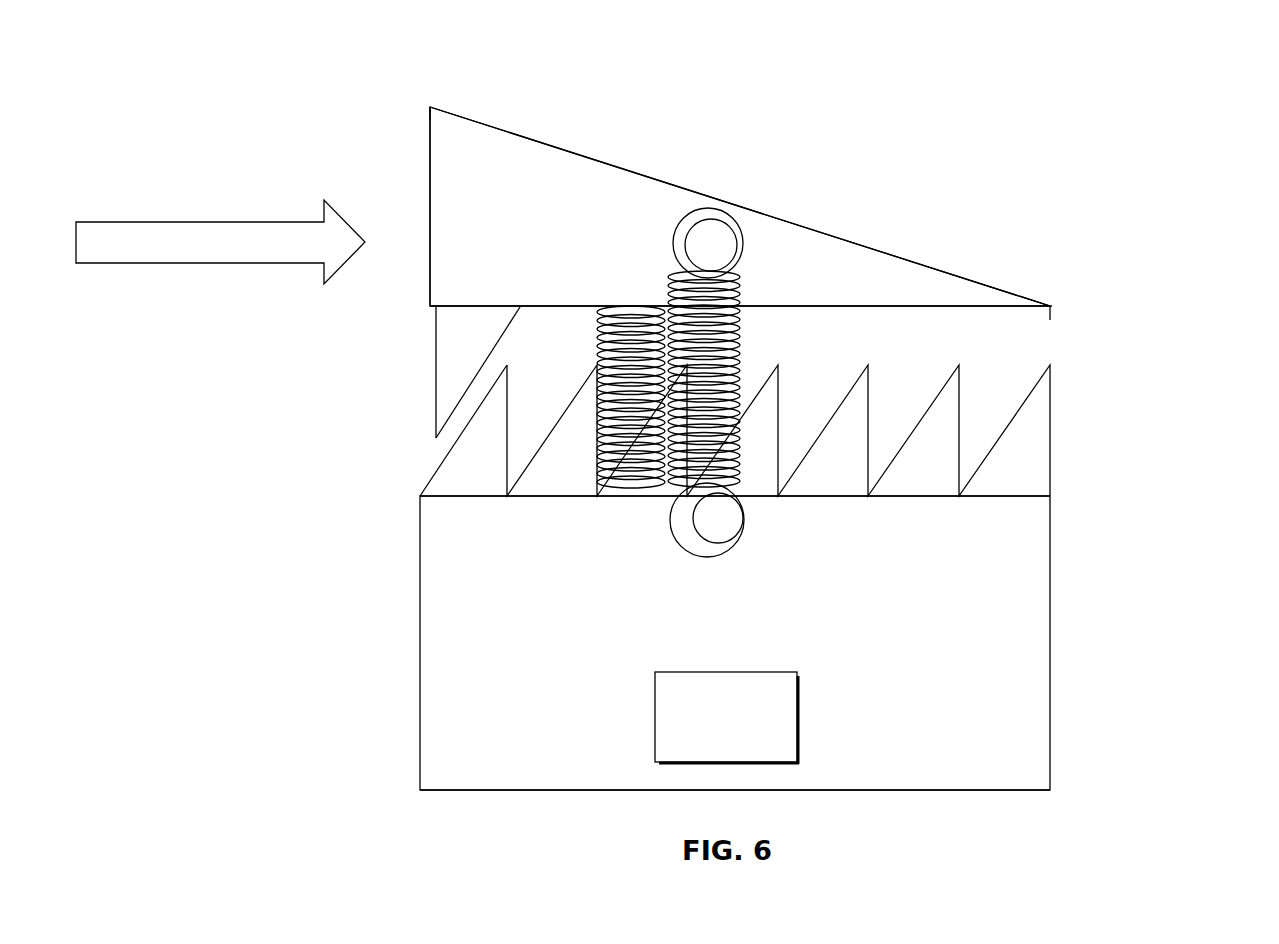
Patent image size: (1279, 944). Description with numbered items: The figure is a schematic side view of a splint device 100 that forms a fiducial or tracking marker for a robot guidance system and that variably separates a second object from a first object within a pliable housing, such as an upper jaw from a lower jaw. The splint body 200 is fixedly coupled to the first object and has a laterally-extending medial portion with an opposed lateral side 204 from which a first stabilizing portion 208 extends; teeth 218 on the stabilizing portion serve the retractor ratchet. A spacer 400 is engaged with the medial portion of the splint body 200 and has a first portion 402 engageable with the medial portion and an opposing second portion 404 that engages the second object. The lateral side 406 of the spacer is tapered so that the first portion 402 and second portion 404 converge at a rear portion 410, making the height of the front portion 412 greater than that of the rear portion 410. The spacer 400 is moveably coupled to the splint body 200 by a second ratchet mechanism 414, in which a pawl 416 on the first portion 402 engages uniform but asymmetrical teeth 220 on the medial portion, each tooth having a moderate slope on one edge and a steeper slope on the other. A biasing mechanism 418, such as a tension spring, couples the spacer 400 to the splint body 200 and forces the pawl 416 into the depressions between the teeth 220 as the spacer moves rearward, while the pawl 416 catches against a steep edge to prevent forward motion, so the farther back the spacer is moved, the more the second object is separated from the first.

The splint device 100 is at (1117, 132).
The splint body 200 is at (1100, 695).
The lateral side of medial portion 204 is at (1050, 498).
The first stabilizing portion 208 is at (555, 614).
The teeth 218 is at (743, 727).
The teeth 220 is at (443, 477).
The spacer 400 is at (848, 190).
The first portion of spacer 402 is at (950, 308).
The second portion of spacer 404 is at (513, 130).
The lateral side of spacer 406 is at (572, 251).
The rear portion of spacer 410 is at (1050, 308).
The front portion of spacer 412 is at (428, 178).
The second ratchet mechanism 414 is at (1118, 448).
The pawl 416 is at (436, 368).
The biasing mechanism 418 is at (613, 328).